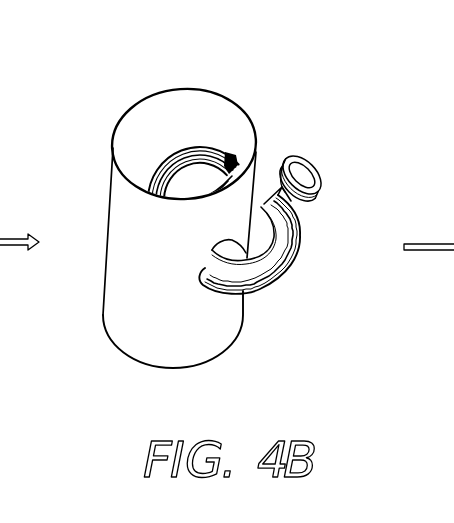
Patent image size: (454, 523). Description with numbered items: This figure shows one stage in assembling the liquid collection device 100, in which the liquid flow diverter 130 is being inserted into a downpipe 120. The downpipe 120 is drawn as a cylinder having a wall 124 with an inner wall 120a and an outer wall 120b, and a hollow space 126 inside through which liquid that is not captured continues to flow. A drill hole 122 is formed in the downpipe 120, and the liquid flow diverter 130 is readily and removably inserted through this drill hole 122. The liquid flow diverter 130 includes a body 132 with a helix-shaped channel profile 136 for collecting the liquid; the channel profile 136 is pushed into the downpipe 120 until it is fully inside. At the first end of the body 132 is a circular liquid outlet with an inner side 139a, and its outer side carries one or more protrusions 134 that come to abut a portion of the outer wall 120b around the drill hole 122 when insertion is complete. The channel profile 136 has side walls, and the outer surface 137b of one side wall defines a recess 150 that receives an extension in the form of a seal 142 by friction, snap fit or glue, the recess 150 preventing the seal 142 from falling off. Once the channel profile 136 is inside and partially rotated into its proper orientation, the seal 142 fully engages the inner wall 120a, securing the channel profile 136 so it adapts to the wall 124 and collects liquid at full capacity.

The liquid collection device 100 is at (104, 108).
The downpipe 120 is at (216, 385).
The inner wall of the downpipe 120a is at (169, 106).
The outer wall of the downpipe 120b is at (148, 307).
The drill hole 122 is at (218, 246).
The wall of the downpipe 124 is at (127, 202).
The hollow space 126 is at (140, 145).
The liquid flow diverter 130 is at (259, 310).
The body 132 is at (273, 291).
The protrusions 134 is at (265, 204).
The channel profile 136 is at (200, 148).
The outer surface of the side wall 137b is at (283, 257).
The inner side of the liquid outlet 139a is at (322, 180).
The seal 142 is at (249, 256).
The recess 150 is at (306, 235).